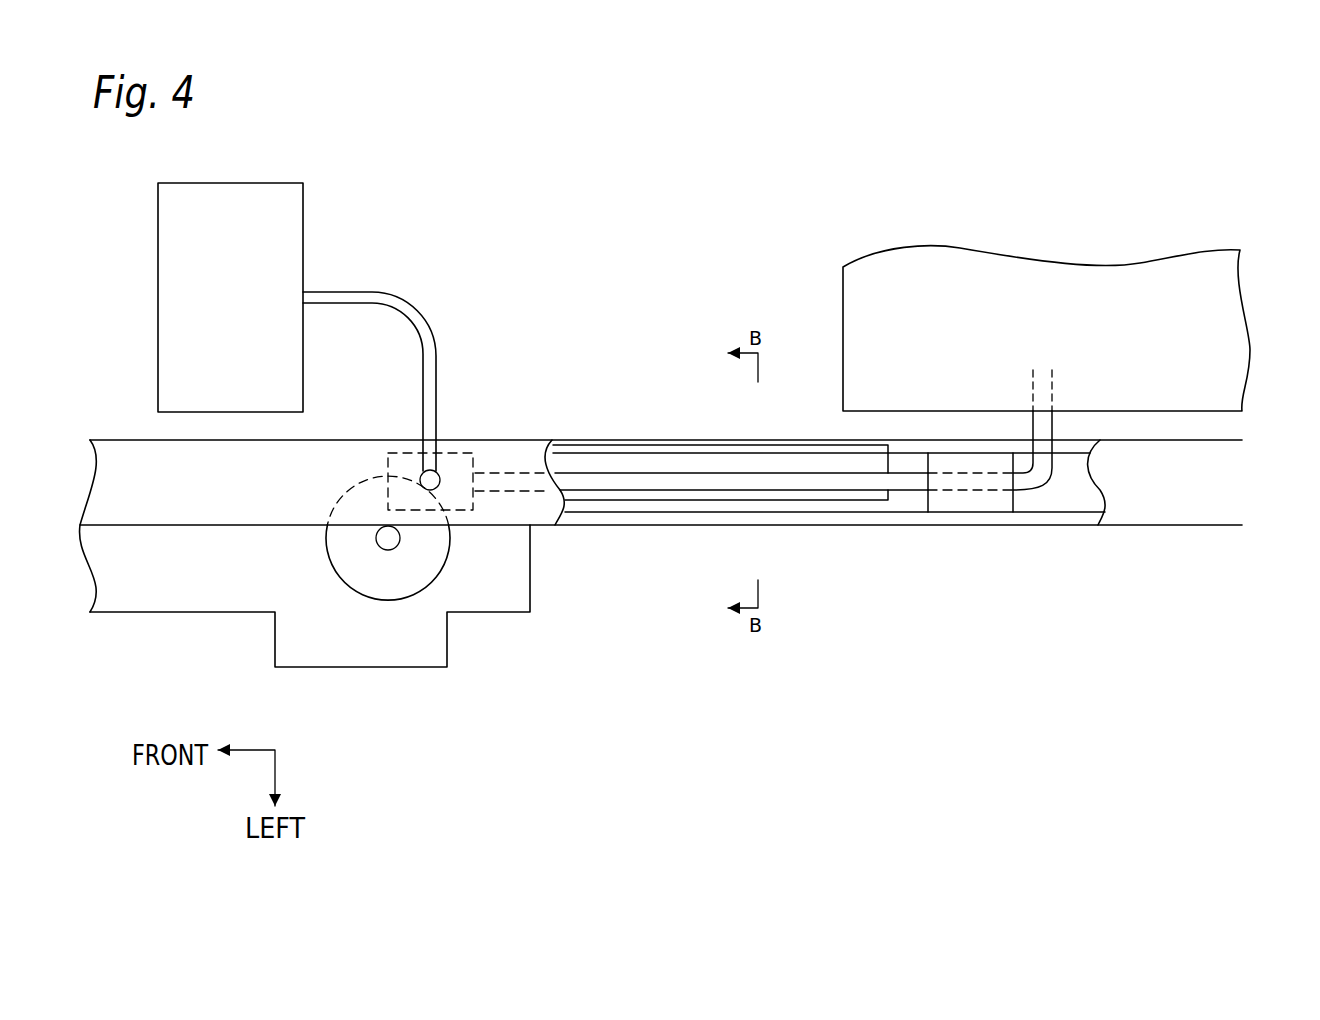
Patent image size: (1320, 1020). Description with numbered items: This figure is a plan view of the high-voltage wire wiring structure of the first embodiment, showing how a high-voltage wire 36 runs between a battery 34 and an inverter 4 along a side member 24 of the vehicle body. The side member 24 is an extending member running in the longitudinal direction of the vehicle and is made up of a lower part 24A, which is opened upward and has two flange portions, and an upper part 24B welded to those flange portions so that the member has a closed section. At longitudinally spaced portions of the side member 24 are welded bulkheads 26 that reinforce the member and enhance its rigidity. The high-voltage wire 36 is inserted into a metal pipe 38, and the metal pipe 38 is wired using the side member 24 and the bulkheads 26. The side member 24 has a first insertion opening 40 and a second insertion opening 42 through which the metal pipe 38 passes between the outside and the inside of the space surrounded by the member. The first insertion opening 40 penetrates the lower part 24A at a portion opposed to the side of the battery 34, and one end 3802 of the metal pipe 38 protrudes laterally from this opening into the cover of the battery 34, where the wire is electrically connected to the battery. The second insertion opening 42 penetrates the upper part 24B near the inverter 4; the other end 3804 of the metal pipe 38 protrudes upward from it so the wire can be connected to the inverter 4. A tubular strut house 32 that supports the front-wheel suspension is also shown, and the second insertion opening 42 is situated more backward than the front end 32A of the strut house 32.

The inverter 4 is at (303, 216).
The side member 24 is at (530, 440).
The lower part 24A is at (1070, 526).
The upper part 24B is at (535, 506).
The bulkhead 26 is at (457, 462).
The strut house 32 is at (398, 602).
The front end 32A is at (327, 537).
The battery 34 is at (1210, 321).
The high-voltage wire 36 is at (421, 311).
The metal pipe 38 is at (901, 494).
The one end 3802 is at (1033, 423).
The other end 3804 is at (420, 483).
The first insertion opening 40 is at (1050, 438).
The second insertion opening 42 is at (437, 492).